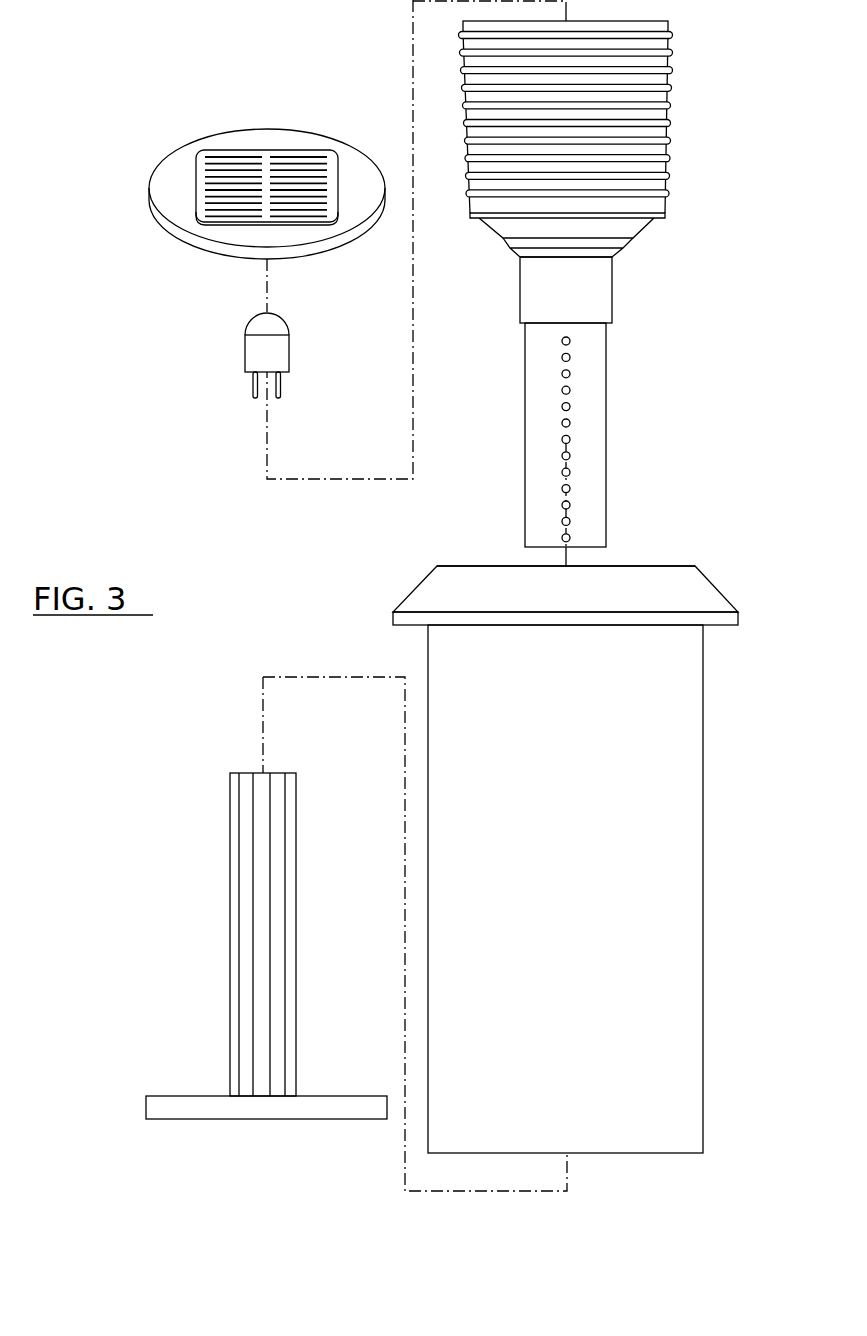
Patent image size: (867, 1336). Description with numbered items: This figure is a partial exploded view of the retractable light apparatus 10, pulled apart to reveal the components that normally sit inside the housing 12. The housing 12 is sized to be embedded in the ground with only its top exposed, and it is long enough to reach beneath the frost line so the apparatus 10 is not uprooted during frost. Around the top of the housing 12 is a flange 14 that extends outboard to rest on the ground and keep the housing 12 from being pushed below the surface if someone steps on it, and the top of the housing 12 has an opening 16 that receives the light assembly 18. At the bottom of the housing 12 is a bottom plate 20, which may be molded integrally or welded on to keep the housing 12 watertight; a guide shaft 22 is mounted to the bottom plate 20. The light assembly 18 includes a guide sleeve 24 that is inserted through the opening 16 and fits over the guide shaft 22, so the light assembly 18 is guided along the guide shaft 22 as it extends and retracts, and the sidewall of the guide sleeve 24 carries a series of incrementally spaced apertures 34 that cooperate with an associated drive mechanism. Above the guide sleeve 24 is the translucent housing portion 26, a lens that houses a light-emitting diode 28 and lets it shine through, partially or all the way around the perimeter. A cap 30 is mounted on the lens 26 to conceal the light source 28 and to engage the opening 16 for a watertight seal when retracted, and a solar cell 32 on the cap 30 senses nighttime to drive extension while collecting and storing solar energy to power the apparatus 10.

The retractable light apparatus 10 is at (733, 1195).
The housing 12 is at (703, 876).
The flange 14 is at (418, 586).
The opening 16 is at (451, 566).
The light assembly 18 is at (234, 227).
The bottom plate 20 is at (200, 1119).
The guide shaft 22 is at (230, 908).
The guide sleeve 24 is at (606, 509).
The translucent housing portion 26 is at (672, 88).
The light-emitting diode 28 is at (245, 342).
The cap 30 is at (195, 243).
The solar cell 32 is at (198, 186).
The apertures 34 is at (570, 440).